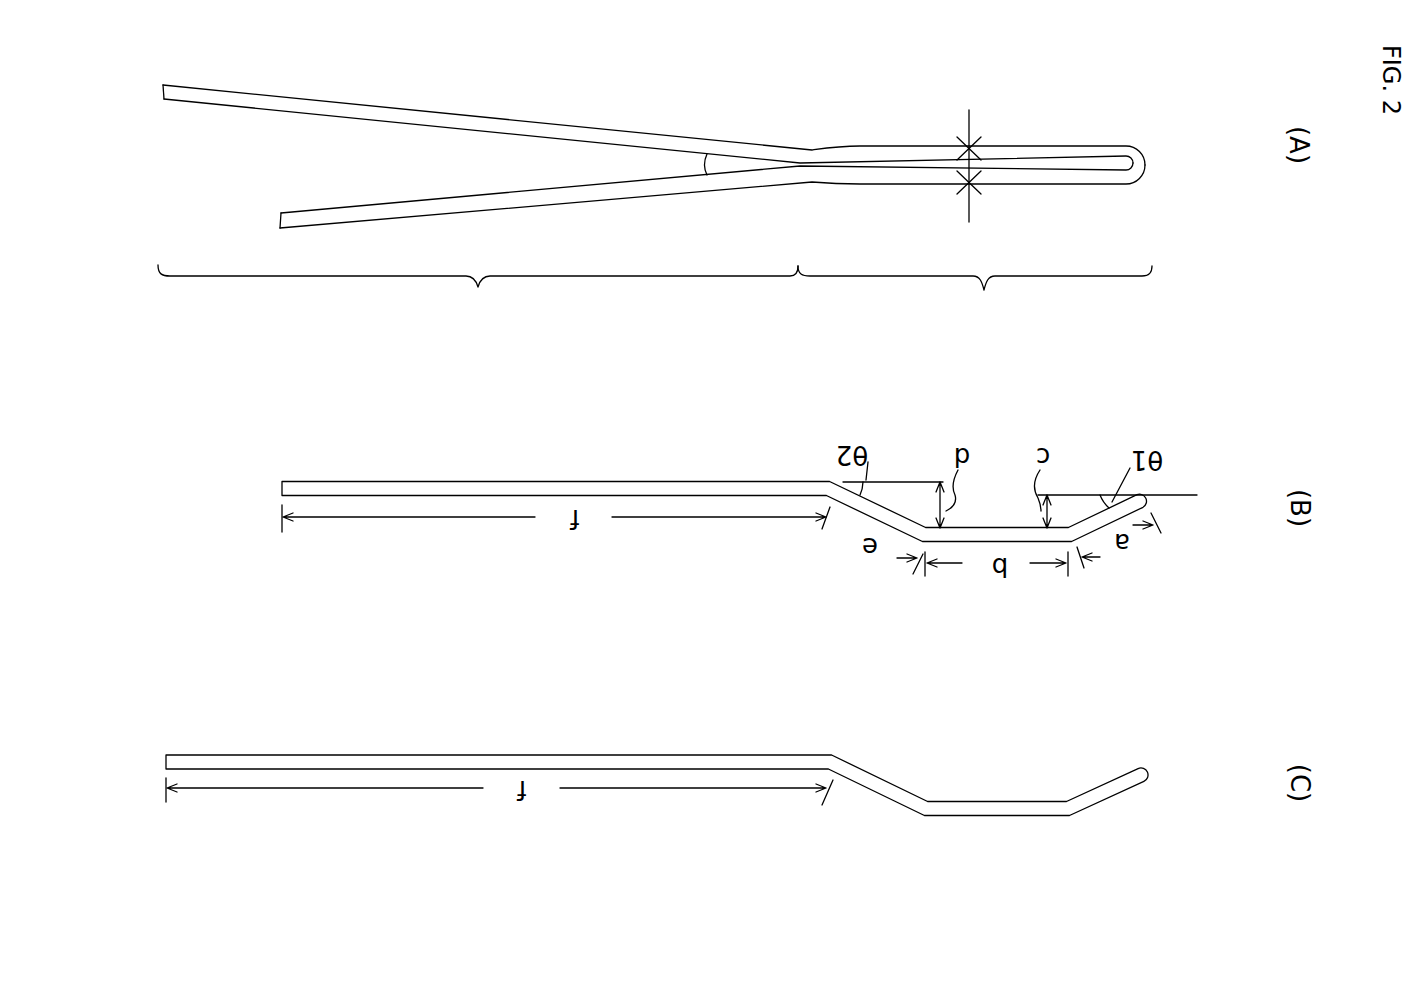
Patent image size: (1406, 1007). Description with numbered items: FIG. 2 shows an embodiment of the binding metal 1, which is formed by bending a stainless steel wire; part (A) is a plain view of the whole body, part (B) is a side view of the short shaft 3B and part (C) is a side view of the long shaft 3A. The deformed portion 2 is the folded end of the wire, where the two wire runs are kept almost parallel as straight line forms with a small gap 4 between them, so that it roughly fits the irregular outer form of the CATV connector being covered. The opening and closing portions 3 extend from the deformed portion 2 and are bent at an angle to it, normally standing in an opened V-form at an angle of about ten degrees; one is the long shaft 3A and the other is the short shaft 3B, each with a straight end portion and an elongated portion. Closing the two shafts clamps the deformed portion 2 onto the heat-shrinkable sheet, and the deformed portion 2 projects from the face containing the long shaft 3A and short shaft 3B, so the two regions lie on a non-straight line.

The binding metal 1 is at (644, 440).
The deformed portion 2 is at (975, 309).
The opening and closing portion 3 is at (478, 306).
The long shaft 3A is at (206, 108).
The short shaft 3B is at (285, 206).
The small gap 4 is at (965, 128).